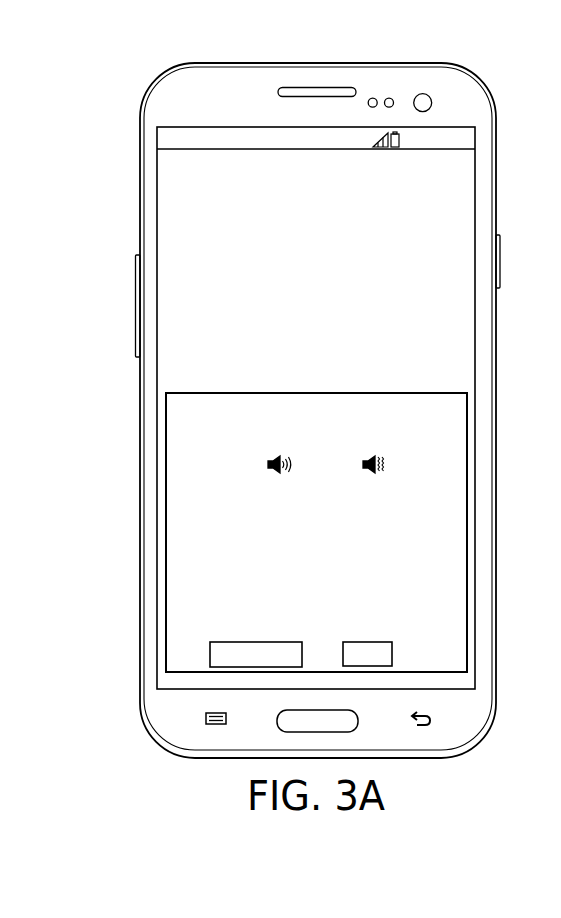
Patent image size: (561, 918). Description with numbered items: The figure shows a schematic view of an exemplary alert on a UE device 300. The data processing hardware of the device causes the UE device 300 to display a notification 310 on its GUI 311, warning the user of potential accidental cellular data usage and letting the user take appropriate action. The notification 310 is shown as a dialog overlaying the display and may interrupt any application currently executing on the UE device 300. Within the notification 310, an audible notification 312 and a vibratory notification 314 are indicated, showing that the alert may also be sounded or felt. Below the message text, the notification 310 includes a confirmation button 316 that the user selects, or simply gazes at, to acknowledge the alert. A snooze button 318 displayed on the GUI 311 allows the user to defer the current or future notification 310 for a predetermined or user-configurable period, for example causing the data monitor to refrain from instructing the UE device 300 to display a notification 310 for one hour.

The UE device 300 is at (470, 85).
The GUI 311 is at (157, 178).
The notification 310 is at (316, 393).
The audible notification 312 is at (268, 464).
The vibratory notification 314 is at (365, 465).
The confirmation button 316 is at (392, 645).
The snooze button 318 is at (212, 650).